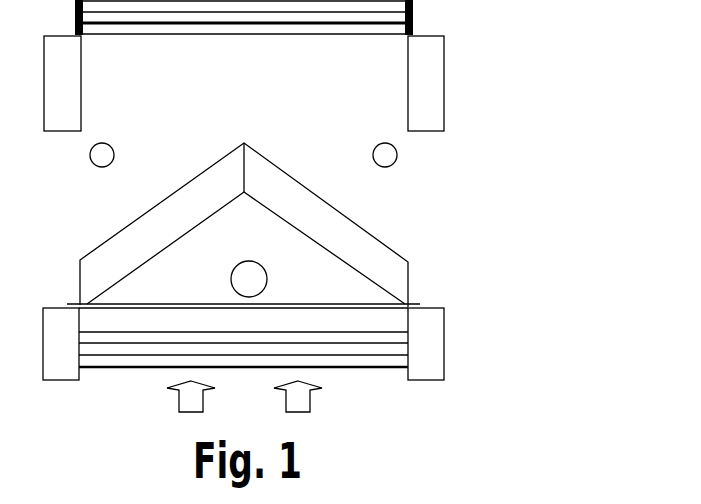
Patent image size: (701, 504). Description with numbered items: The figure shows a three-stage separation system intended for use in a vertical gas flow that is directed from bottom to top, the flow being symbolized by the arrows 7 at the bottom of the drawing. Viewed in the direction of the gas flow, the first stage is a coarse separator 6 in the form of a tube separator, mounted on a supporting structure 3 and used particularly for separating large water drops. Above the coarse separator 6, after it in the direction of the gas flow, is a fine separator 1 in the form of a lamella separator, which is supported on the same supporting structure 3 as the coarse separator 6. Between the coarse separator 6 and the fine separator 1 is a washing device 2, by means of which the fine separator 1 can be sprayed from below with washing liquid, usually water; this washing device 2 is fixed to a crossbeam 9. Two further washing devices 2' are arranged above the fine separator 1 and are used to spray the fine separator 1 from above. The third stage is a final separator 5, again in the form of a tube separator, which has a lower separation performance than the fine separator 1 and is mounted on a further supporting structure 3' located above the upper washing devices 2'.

The fine separator 1 is at (350, 223).
The washing device 2 is at (371, 261).
The further washing devices 2' is at (313, 139).
The supporting structure 3 is at (296, 326).
The further supporting structure 3' is at (271, 83).
The final separator 5 is at (413, 14).
The coarse separator 6 is at (363, 367).
The arrows 7 is at (300, 400).
The crossbeam 9 is at (422, 293).